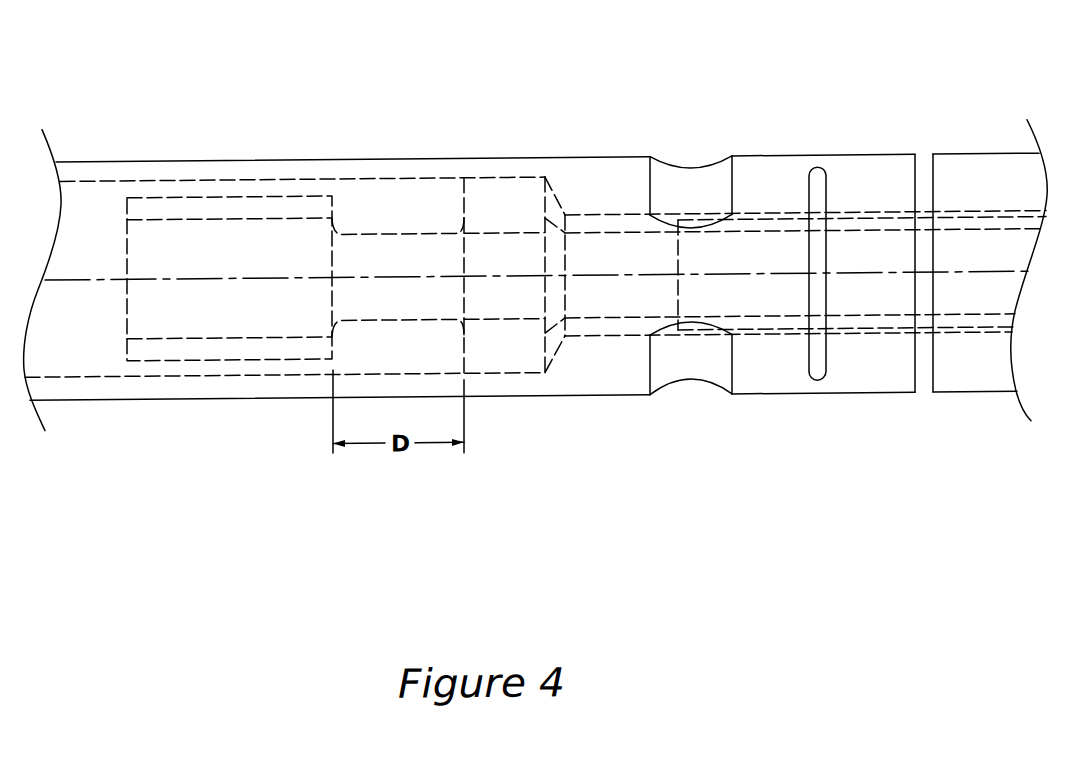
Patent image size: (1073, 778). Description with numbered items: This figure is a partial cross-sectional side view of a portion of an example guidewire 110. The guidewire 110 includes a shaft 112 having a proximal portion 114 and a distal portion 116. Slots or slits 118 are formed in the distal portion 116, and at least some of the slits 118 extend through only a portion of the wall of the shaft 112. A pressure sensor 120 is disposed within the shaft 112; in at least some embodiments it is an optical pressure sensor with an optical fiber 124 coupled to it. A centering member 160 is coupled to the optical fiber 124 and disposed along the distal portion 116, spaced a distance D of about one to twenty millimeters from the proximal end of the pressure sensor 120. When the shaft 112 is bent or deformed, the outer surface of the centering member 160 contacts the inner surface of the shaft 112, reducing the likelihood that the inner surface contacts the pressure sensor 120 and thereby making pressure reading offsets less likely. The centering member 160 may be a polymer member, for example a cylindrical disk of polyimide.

The guidewire 110 is at (193, 100).
The shaft 112 is at (343, 160).
The proximal portion 114 is at (963, 184).
The distal portion 116 is at (442, 171).
The slits 118 is at (715, 376).
The pressure sensor 120 is at (223, 322).
The optical fiber 124 is at (610, 322).
The centering member 160 is at (503, 366).